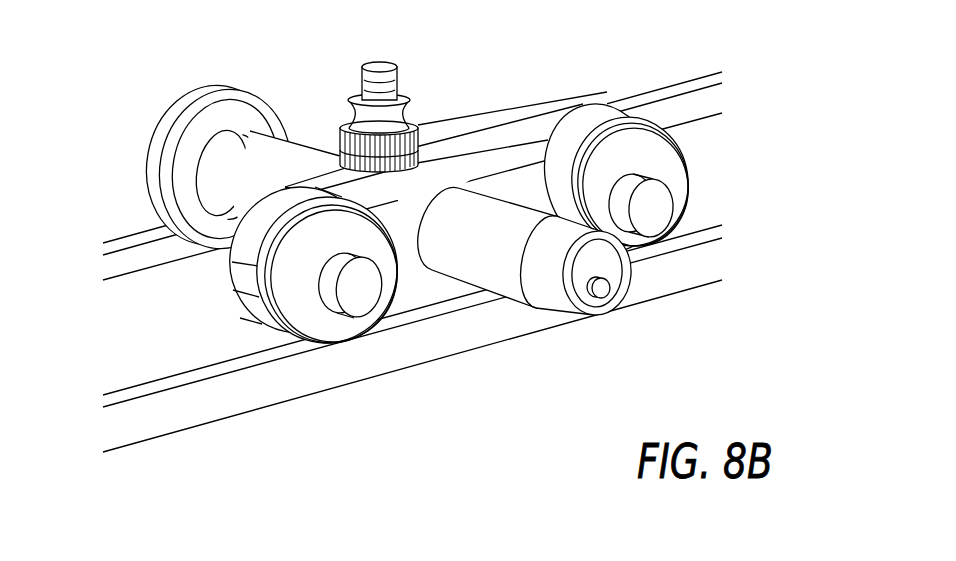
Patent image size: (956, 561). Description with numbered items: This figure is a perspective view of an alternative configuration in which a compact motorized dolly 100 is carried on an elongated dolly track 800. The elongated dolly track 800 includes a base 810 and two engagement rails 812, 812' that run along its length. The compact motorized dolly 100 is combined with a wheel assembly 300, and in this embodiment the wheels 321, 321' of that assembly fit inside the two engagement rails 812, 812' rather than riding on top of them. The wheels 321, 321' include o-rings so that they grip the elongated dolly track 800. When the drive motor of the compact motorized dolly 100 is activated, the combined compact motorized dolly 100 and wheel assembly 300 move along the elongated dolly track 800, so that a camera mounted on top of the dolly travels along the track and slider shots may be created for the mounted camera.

The compact motorized dolly 100 is at (598, 324).
The wheel assembly 300 is at (456, 118).
The wheel 321 is at (261, 266).
The wheel 321' is at (622, 139).
The elongated dolly track 800 is at (438, 394).
The base 810 is at (700, 182).
The engagement rail 812 is at (392, 163).
The engagement rail 812' is at (433, 316).